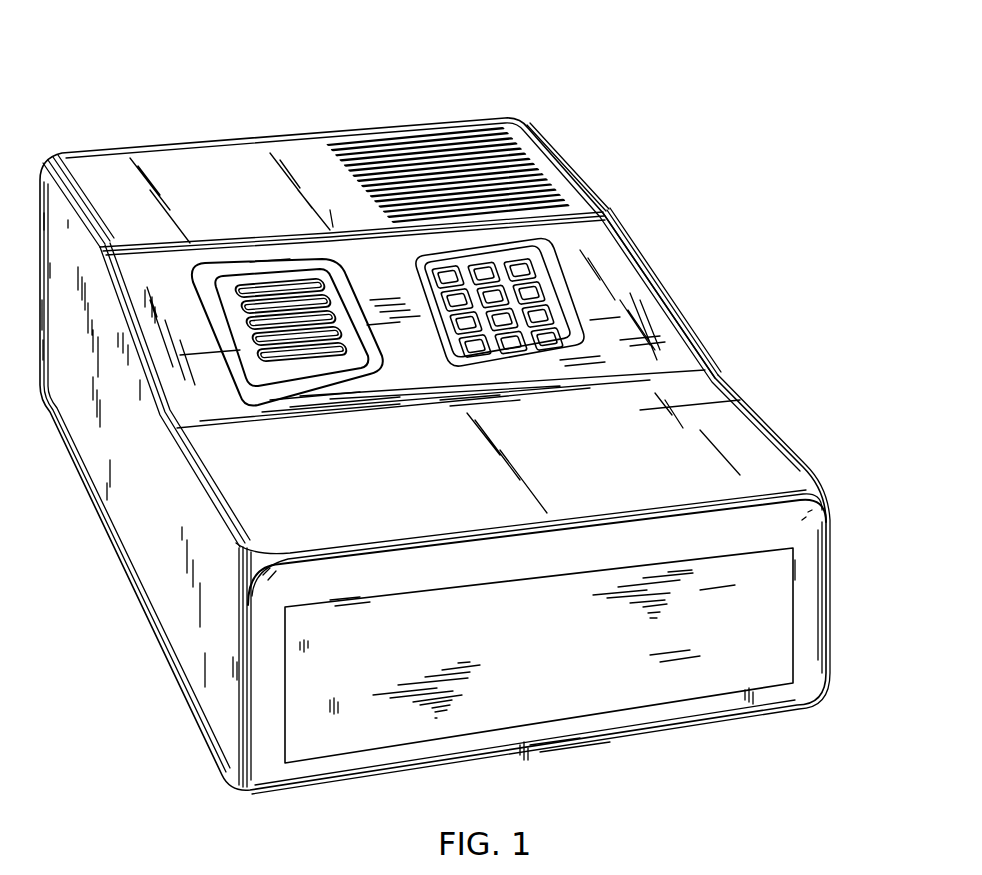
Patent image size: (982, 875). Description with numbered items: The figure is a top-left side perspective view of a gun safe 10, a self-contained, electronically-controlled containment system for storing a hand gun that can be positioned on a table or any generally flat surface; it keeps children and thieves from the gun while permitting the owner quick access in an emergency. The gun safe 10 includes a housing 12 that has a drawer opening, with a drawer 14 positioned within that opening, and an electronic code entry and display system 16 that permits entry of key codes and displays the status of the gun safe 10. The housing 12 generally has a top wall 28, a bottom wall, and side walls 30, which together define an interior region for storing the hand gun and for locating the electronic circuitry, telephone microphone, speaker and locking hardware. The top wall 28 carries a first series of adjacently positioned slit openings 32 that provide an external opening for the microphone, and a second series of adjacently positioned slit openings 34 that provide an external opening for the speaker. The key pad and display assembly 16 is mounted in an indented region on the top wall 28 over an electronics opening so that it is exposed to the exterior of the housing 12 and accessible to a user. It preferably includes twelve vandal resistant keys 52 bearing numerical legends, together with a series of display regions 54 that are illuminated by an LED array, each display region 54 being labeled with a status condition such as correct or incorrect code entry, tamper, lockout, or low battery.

The gun safe 10 is at (628, 89).
The housing 12 is at (649, 279).
The drawer 14 is at (755, 587).
The electronic code entry and display system 16 is at (570, 275).
The top wall 28 is at (731, 468).
The side walls 30 is at (125, 468).
The first series of adjacently positioned slit openings 32 is at (257, 372).
The second series of adjacently positioned slit openings 34 is at (488, 163).
The vandal resistant keys 52 is at (547, 341).
The display regions 54 is at (253, 327).